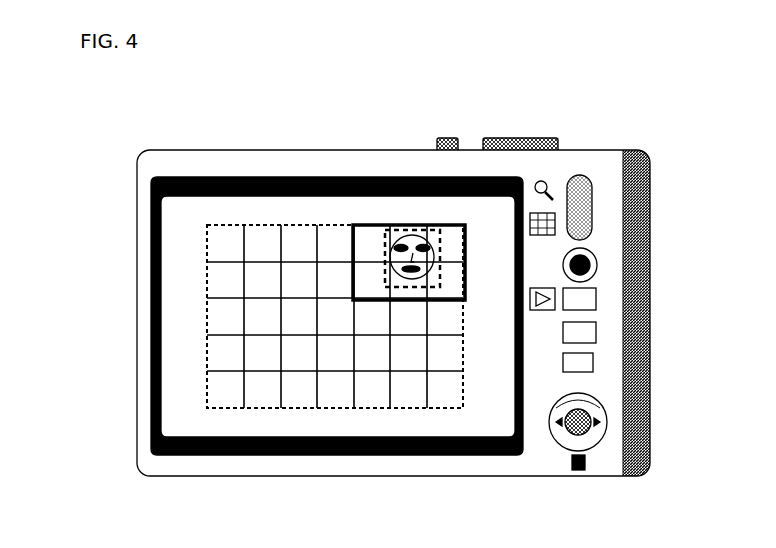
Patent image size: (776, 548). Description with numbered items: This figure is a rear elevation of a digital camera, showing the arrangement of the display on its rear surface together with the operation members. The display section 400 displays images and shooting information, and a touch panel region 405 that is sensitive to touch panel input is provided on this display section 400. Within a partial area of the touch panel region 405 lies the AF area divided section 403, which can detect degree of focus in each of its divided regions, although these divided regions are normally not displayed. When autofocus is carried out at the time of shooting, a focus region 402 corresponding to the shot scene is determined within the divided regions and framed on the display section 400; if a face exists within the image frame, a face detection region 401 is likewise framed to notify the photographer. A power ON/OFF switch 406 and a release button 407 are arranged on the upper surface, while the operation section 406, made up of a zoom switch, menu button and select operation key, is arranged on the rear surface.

The display section 400 is at (435, 455).
The face detection region 401 is at (382, 238).
The focus region 402 is at (352, 237).
The AF area divided section 403 is at (228, 408).
The touch panel region 405 is at (151, 352).
The operation section 406 is at (437, 138).
The release button 407 is at (518, 138).